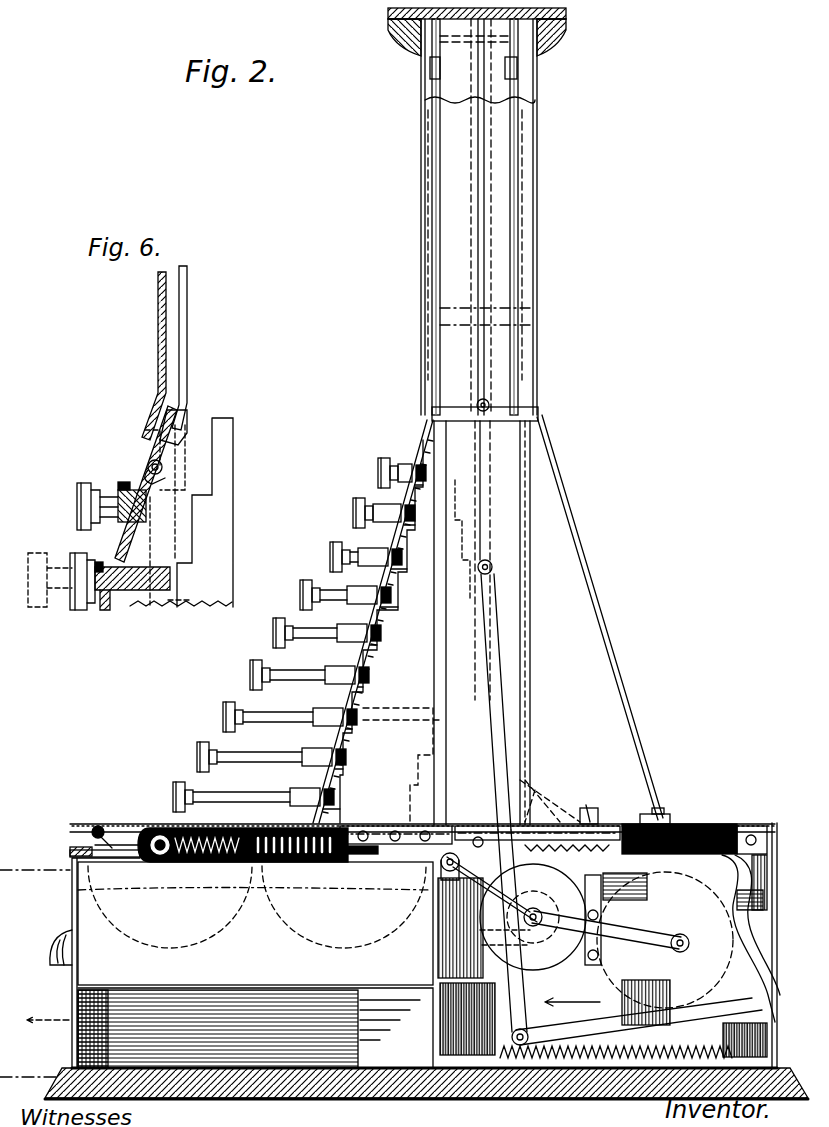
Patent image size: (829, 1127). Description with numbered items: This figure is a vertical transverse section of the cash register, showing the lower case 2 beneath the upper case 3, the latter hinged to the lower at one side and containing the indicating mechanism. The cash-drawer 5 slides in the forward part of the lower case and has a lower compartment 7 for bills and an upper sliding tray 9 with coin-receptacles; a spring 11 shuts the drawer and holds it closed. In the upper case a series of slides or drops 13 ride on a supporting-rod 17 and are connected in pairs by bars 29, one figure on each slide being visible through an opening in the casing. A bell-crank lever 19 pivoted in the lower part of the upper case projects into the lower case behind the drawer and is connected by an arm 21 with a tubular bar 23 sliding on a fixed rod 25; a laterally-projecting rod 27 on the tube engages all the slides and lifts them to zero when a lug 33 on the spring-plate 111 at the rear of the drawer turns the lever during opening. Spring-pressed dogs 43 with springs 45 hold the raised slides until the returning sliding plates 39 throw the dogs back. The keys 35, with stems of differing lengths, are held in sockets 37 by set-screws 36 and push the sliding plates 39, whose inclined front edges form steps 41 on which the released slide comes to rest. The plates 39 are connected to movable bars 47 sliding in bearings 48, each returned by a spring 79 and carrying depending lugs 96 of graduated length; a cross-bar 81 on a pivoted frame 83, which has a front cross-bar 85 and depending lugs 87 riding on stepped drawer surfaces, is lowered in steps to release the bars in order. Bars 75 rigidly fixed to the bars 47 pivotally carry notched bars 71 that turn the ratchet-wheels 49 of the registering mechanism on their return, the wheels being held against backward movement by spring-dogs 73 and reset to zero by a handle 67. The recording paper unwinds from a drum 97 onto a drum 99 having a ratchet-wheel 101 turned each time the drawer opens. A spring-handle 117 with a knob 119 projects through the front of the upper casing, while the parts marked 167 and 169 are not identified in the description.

In FIG. 2, the lower case 2 is at (775, 960).
In FIG. 2, the upper case 3 is at (607, 646).
In FIG. 2, the cash-drawer 5 is at (70, 935).
In FIG. 2, the lower compartment 7 is at (255, 1028).
In FIG. 2, the upper sliding tray 9 is at (255, 923).
In FIG. 2, the spring 11 is at (470, 1072).
In FIG. 2, the slides or drops 13 is at (516, 143).
In FIG. 6, the slides or drops 13 is at (190, 360).
In FIG. 2, the supporting-rod 17 is at (438, 284).
In FIG. 2, the bell-crank lever 19 is at (716, 905).
In FIG. 2, the arm 21 is at (495, 715).
In FIG. 2, the tubular bar 23 is at (480, 448).
In FIG. 2, the fixed rod or support 25 is at (488, 282).
In FIG. 2, the laterally-projecting rod 27 is at (486, 401).
In FIG. 2, the bars 29 is at (470, 37).
In FIG. 2, the catch or lug 33 is at (752, 910).
In FIG. 2, the keys 35 is at (352, 510).
In FIG. 6, the keys 35 is at (92, 488).
In FIG. 6, the set-screws 36 is at (124, 480).
In FIG. 2, the sockets 37 is at (333, 668).
In FIG. 6, the sockets 37 is at (120, 520).
In FIG. 2, the sliding plate 39 is at (405, 631).
In FIG. 6, the sliding plate 39 is at (181, 512).
In FIG. 2, the steps 41 is at (398, 596).
In FIG. 2, the dog 43 is at (428, 428).
In FIG. 6, the dog 43 is at (190, 425).
In FIG. 6, the spring 45 is at (163, 470).
In FIG. 2, the movable bars 47 is at (464, 822).
In FIG. 2, the bearings or supports 48 is at (652, 812).
In FIG. 2, the ratchet-wheels 49 is at (425, 862).
In FIG. 2, the handle 67 is at (455, 878).
In FIG. 2, the movable bars 71 is at (392, 862).
In FIG. 2, the spring-dogs 73 is at (470, 930).
In FIG. 2, the bars 75 is at (540, 826).
In FIG. 6, the bars 75 is at (163, 346).
In FIG. 2, the spring 79 is at (190, 862).
In FIG. 2, the cross-bar 81 is at (347, 864).
In FIG. 2, the pivoted frame 83 is at (135, 860).
In FIG. 2, the cross-bar 85 is at (77, 847).
In FIG. 2, the depending lugs 87 is at (75, 857).
In FIG. 2, the depending lugs or projections 96 is at (273, 862).
In FIG. 2, the drum or wheel 97 is at (674, 940).
In FIG. 2, the drum 99 is at (533, 912).
In FIG. 2, the ratchet-wheel 101 is at (498, 972).
In FIG. 2, the spring-plate 111 is at (640, 1008).
In FIG. 2, the column rod 117 is at (524, 522).
In FIG. 2, the knob 119 is at (112, 829).
In FIG. 2, the arm 167 is at (662, 876).
In FIG. 2, the direction arrow 169 is at (616, 1020).